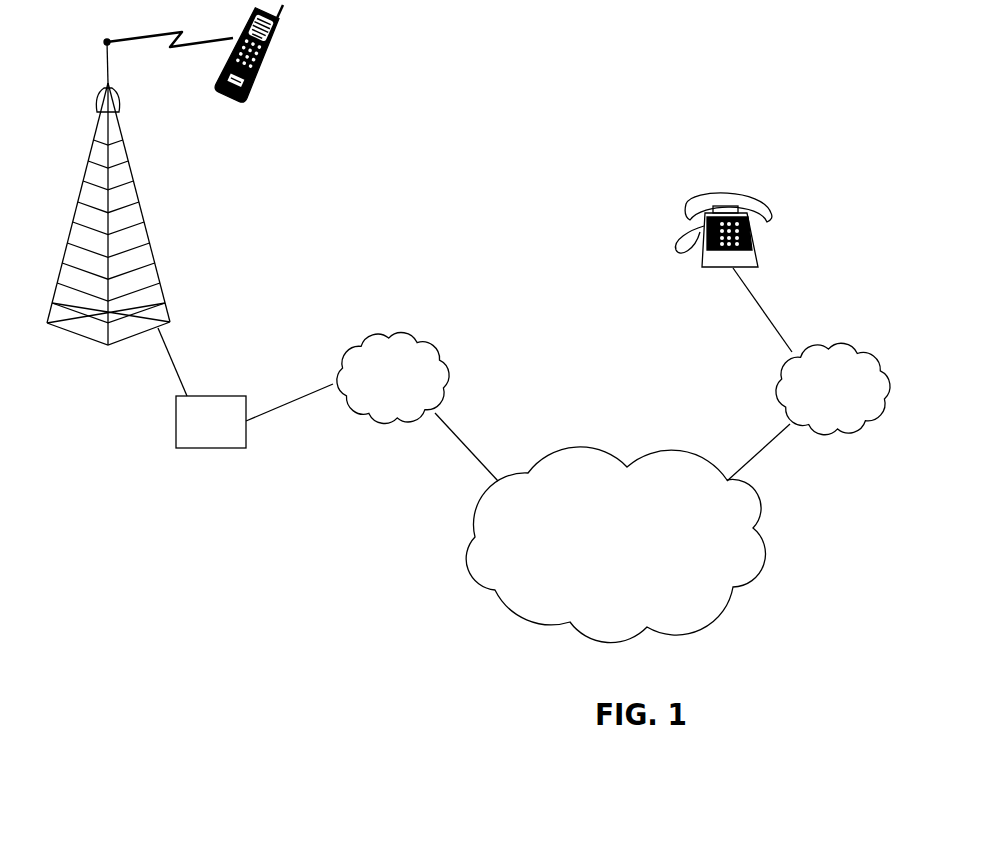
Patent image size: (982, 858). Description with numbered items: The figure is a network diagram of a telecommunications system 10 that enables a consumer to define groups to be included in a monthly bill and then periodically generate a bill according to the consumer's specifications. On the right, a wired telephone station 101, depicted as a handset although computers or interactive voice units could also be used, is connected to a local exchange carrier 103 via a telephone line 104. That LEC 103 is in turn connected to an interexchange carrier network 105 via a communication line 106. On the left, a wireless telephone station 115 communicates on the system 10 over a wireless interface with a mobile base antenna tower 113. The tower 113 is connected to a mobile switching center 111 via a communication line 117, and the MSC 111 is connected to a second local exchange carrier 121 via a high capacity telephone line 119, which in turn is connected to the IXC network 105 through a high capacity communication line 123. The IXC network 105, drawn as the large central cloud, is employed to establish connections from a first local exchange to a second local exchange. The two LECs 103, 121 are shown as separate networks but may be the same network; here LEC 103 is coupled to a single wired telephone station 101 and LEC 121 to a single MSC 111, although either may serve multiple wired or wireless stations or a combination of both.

The telecommunications system 10 is at (830, 676).
The wired telephone station 101 is at (702, 200).
The local exchange carrier 103 is at (873, 350).
The telephone line 104 is at (763, 312).
The interexchange carrier network 105 is at (605, 452).
The communication line 106 is at (757, 453).
The mobile switching center 111 is at (213, 395).
The mobile base antenna tower 113 is at (154, 251).
The wireless telephone station 115 is at (267, 63).
The communication line 117 is at (177, 362).
The high capacity telephone line 119 is at (293, 397).
The local exchange carrier 121 is at (387, 330).
The high capacity communication line 123 is at (470, 443).